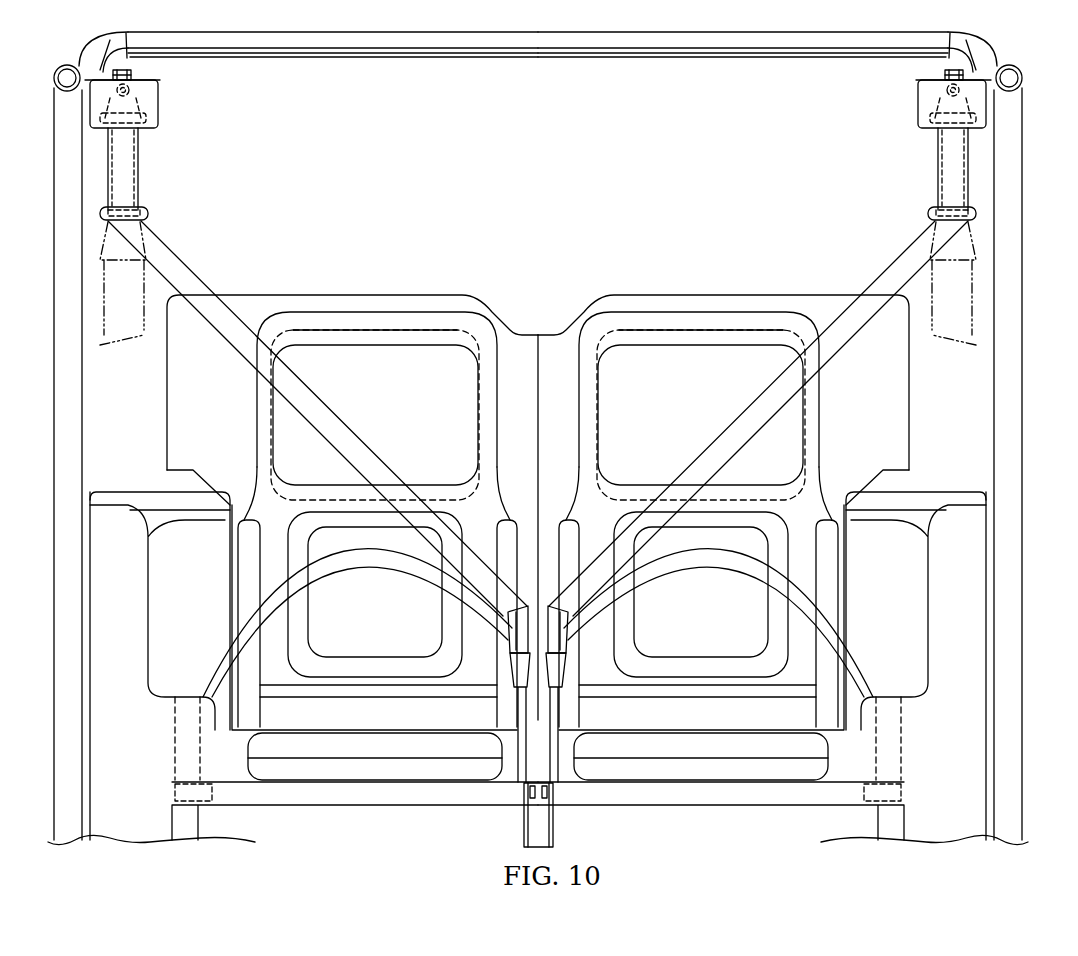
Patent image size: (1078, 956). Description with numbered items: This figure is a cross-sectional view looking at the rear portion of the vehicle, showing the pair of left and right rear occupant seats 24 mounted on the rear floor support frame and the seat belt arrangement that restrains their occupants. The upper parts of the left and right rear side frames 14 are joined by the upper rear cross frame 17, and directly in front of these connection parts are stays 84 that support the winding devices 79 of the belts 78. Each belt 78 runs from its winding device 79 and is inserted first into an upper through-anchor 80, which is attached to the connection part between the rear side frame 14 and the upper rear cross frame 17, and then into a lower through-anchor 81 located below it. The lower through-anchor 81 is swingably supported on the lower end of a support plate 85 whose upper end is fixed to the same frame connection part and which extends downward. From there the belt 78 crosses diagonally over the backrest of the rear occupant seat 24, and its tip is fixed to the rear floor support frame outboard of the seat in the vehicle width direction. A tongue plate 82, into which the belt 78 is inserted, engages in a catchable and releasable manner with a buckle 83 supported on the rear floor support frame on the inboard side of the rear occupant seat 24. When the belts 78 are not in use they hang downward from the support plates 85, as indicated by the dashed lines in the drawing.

The rear side frame 14 is at (78, 414).
The upper rear cross frame 17 is at (600, 45).
The rear occupant seat 24 is at (378, 610).
The belt 78 is at (190, 272).
The winding device 79 is at (158, 118).
The upper through-anchor 80 is at (133, 98).
The lower through-anchor 81 is at (150, 216).
The tongue plate 82 is at (510, 633).
The buckle 83 is at (512, 672).
The stay 84 is at (100, 74).
The support plate 85 is at (140, 165).